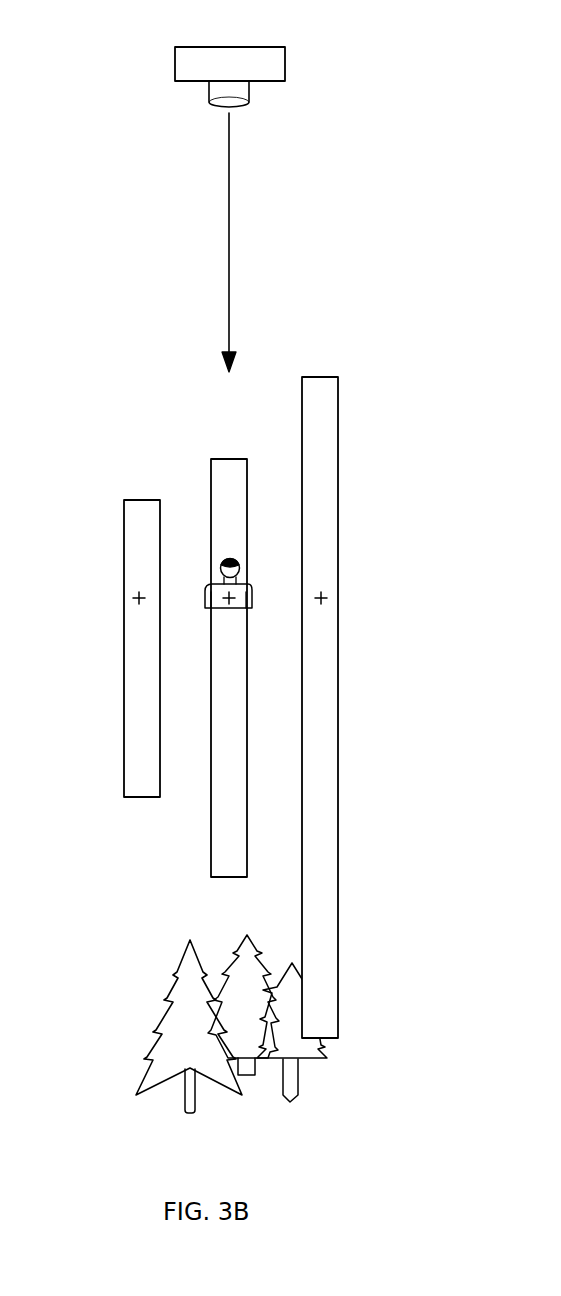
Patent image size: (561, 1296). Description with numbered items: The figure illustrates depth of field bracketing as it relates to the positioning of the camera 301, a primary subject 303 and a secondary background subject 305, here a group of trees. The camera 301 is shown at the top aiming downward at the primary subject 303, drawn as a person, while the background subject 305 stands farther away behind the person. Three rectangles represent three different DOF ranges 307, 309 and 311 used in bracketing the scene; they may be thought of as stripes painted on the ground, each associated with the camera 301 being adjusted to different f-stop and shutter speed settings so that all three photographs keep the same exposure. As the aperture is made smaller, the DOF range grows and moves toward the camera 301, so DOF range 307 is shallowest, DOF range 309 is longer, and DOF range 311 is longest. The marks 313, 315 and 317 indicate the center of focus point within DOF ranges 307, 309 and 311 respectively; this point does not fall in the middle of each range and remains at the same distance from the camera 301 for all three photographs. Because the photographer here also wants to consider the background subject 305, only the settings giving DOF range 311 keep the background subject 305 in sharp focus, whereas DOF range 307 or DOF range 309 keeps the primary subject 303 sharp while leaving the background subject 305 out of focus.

The camera 301 is at (271, 60).
The primary subject 303 is at (199, 530).
The secondary subject 305 is at (212, 1024).
The DOF range 307 is at (116, 614).
The DOF range 309 is at (204, 635).
The DOF range 311 is at (339, 674).
The center of focus point 313 is at (90, 567).
The center of focus point 315 is at (324, 534).
The center of focus point 317 is at (373, 572).